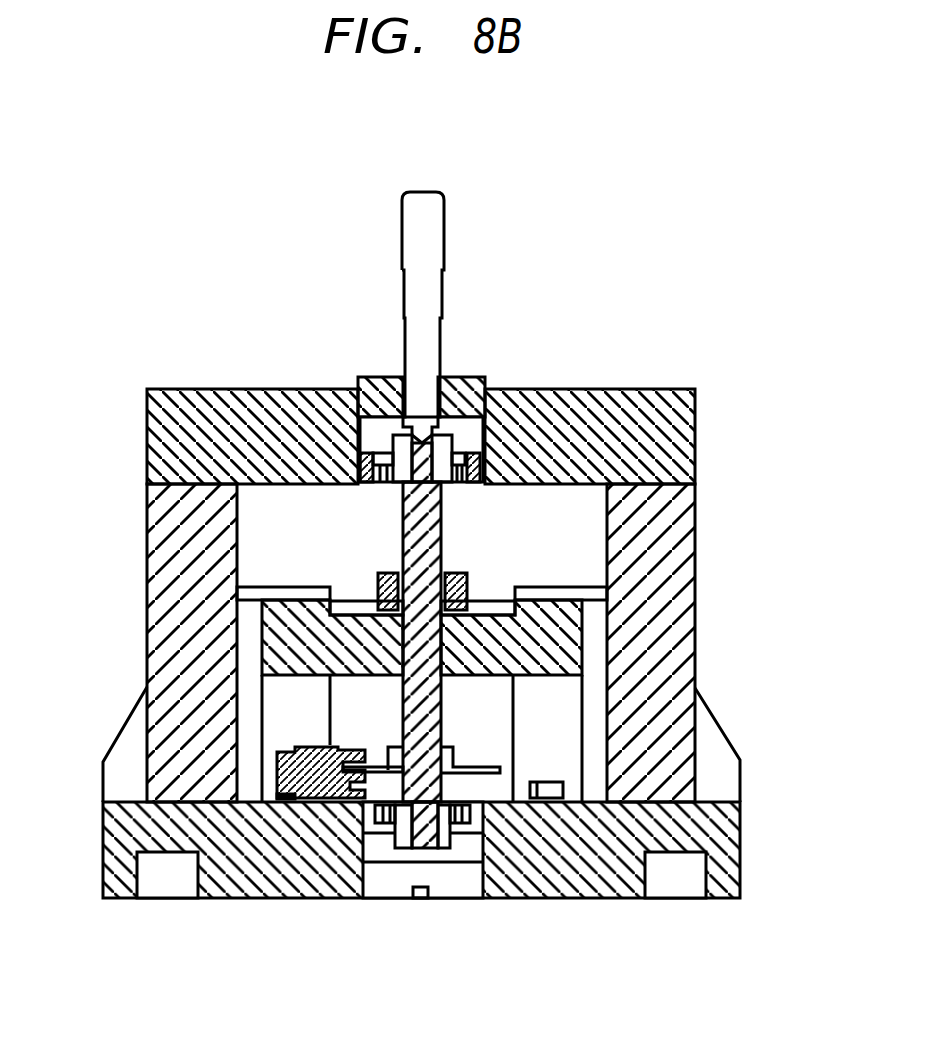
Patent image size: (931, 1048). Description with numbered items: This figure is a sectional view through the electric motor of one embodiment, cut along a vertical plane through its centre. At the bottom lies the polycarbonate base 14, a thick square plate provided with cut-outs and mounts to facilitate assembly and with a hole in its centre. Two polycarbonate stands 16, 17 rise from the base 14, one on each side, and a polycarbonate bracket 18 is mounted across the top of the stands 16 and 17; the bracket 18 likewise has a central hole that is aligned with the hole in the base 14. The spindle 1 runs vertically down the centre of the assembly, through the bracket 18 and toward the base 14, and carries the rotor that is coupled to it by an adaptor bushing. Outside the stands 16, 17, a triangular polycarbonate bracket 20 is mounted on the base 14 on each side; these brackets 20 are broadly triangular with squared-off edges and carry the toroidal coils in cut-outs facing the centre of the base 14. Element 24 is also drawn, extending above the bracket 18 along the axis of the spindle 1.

The spindle 1 is at (441, 543).
The polycarbonate base 14 is at (740, 837).
The polycarbonate stand 16 is at (695, 585).
The polycarbonate stand 17 is at (147, 593).
The polycarbonate bracket 18 is at (615, 389).
The polycarbonate bracket 20 is at (727, 737).
The actuating pin 24 is at (443, 303).